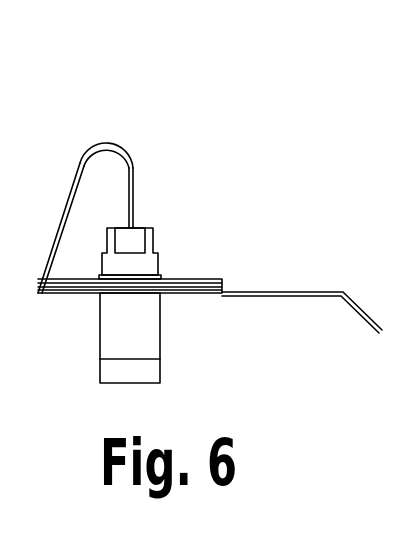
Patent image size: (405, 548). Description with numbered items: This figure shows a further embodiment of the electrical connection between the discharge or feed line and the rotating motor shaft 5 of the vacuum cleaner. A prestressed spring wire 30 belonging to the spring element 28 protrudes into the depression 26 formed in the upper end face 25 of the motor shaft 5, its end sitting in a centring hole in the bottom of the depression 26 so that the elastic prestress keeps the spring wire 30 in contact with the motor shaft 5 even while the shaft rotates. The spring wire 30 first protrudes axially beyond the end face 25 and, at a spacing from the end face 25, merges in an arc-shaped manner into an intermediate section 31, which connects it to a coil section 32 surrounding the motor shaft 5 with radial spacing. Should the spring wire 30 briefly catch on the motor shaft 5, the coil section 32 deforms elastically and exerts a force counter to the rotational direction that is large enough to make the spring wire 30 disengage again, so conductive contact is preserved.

The motor shaft 5 is at (145, 338).
The end face 25 is at (113, 228).
The depression 26 is at (137, 243).
The spring element 28 is at (75, 138).
The spring wire 30 is at (113, 142).
The intermediate section 31 is at (68, 190).
The coil section 32 is at (192, 283).